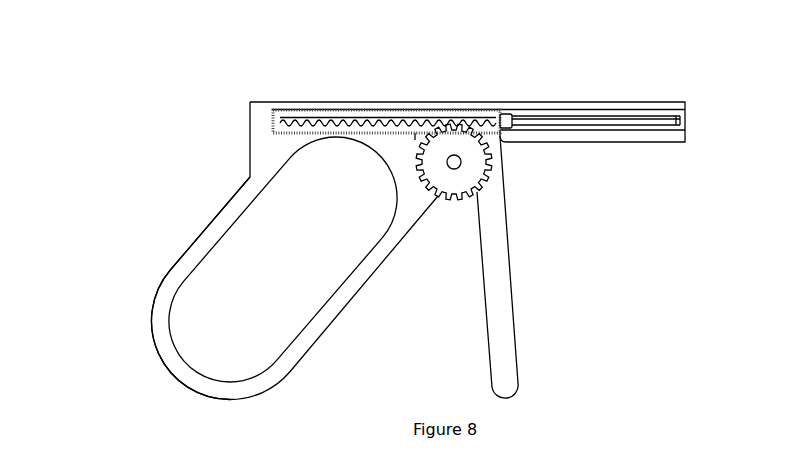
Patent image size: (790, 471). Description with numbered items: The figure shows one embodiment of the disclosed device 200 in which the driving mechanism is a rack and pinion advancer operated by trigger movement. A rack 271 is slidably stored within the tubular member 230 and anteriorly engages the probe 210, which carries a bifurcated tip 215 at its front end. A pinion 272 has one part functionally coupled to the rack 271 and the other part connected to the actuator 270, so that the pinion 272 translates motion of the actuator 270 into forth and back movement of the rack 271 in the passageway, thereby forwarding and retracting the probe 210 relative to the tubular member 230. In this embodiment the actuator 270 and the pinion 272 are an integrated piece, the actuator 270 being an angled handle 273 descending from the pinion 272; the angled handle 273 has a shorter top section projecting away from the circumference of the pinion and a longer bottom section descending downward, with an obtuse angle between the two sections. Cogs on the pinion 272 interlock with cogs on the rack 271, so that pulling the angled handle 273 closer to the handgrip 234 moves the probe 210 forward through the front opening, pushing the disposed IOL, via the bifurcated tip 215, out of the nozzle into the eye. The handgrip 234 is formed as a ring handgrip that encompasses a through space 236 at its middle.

The disclosed device 200 is at (192, 98).
The probe 210 is at (573, 123).
The bifurcated tip 215 is at (678, 122).
The tubular member 230 is at (263, 133).
The handgrip 234 is at (192, 255).
The through space 236 is at (238, 300).
The actuator 270 is at (475, 217).
The rack 271 is at (322, 120).
The pinion 272 is at (467, 167).
The angled handle 273 is at (493, 338).